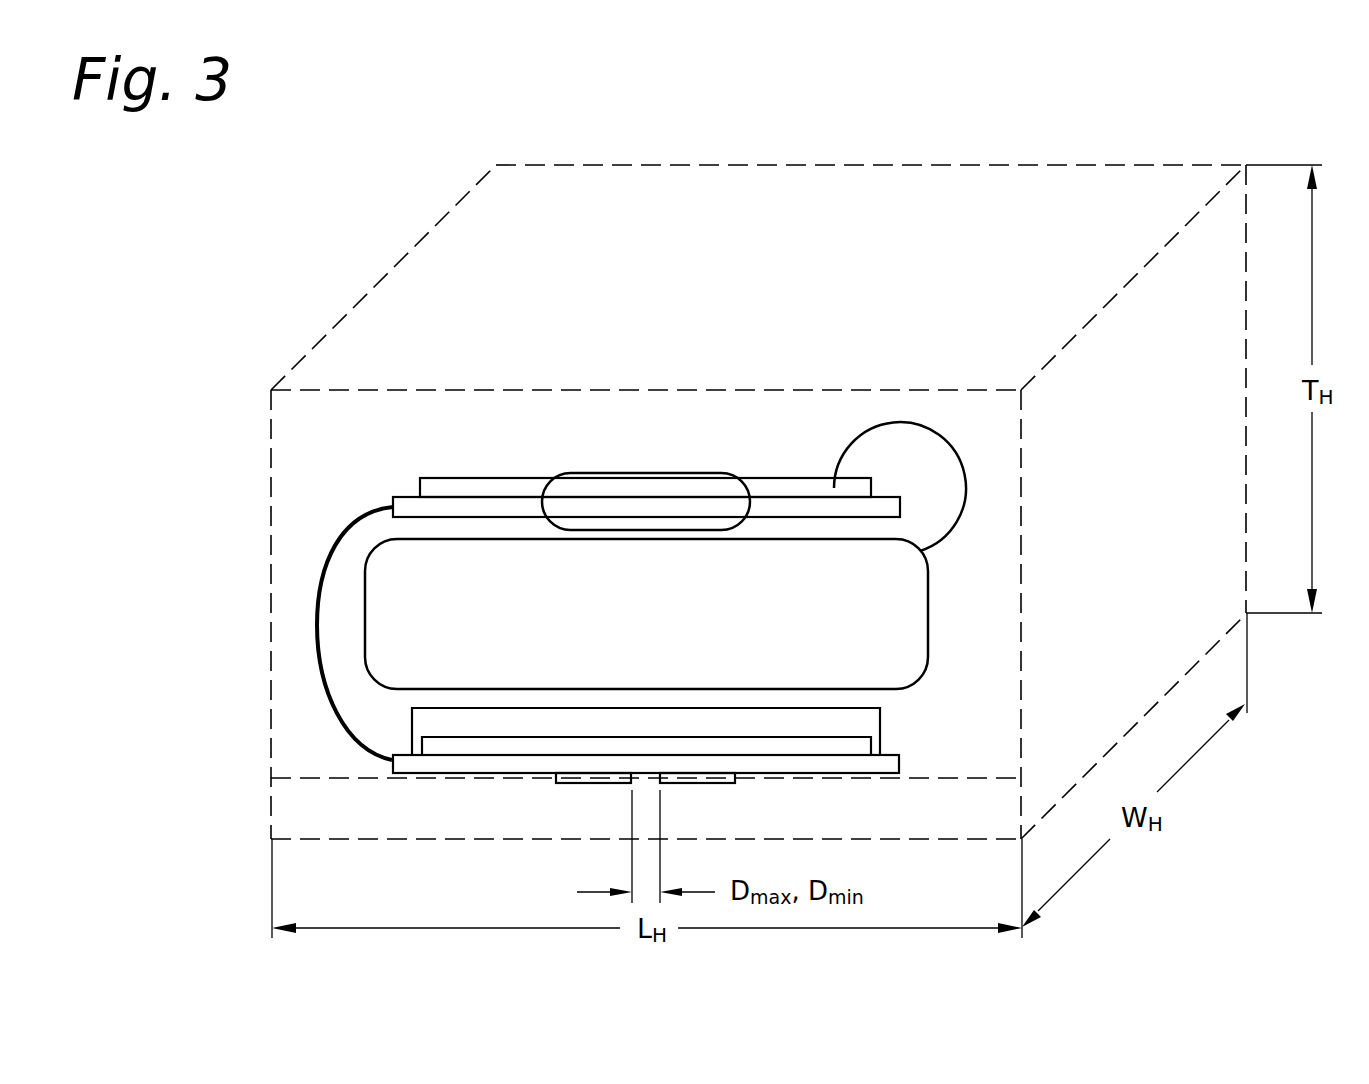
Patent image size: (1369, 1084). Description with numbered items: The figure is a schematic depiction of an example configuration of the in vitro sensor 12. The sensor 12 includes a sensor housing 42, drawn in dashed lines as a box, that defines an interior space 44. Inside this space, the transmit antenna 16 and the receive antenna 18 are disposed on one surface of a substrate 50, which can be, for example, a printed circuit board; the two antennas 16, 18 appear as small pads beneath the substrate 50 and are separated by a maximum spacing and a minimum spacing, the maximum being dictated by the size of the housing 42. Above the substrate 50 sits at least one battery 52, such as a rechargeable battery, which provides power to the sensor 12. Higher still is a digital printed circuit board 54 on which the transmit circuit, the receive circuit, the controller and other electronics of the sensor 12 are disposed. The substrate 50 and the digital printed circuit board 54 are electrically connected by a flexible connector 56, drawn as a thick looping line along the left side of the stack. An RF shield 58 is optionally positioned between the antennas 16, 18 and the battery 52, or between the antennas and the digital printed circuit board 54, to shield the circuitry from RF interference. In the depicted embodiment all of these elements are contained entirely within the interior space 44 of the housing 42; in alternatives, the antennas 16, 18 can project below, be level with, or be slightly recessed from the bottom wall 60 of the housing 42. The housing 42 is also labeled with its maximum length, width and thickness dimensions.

The sensor 12 is at (223, 835).
The transmit antenna 16 is at (575, 785).
The receive antenna 18 is at (717, 785).
The sensor housing 42 is at (1012, 163).
The interior space 44 is at (298, 490).
The substrate 50 is at (402, 755).
The battery 52 is at (365, 563).
The digital printed circuit board 54 is at (403, 497).
The flexible connector 56 is at (318, 592).
The RF shield 58 is at (413, 722).
The bottom wall 60 is at (307, 778).